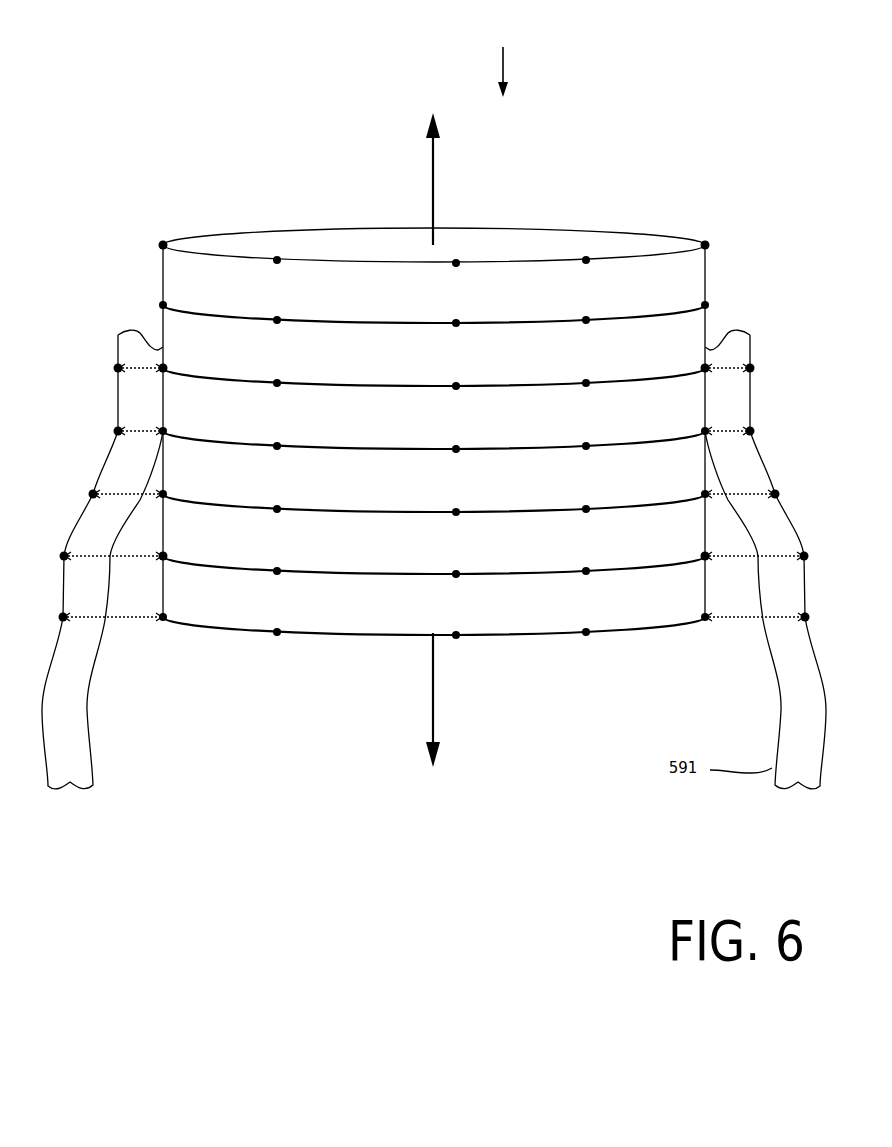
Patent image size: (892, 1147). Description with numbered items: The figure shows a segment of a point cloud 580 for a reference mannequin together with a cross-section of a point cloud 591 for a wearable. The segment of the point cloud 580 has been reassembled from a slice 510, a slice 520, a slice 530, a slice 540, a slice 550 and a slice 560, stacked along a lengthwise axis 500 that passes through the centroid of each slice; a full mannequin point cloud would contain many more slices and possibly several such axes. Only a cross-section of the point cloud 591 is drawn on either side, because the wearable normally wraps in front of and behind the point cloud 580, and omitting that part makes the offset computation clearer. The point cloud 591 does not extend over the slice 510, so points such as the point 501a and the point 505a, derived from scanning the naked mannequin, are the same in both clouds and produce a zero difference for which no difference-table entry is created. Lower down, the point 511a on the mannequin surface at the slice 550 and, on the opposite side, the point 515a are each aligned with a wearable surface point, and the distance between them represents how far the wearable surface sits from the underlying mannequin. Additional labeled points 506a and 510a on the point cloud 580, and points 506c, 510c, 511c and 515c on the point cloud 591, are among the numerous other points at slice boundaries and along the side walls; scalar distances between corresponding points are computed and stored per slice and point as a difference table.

The lengthwise axis 500 is at (436, 192).
The point cloud segment for the reference mannequin 580 is at (510, 55).
The point 501a is at (163, 245).
The point 505a is at (705, 245).
The first layer edge point 506a is at (165, 369).
The second layer edge point 510a is at (703, 369).
The point 511a is at (165, 557).
The point 515a is at (703, 557).
The first flap displaced point 506c is at (118, 366).
The second flap displaced point 510c is at (752, 366).
The third flap displaced point 511c is at (64, 550).
The fourth flap displaced point 515c is at (806, 548).
The slice 510 is at (419, 301).
The slice 520 is at (419, 364).
The slice 530 is at (419, 426).
The slice 540 is at (419, 489).
The slice 550 is at (419, 552).
The slice 560 is at (419, 614).
The point cloud of the wearable 591 is at (95, 768).